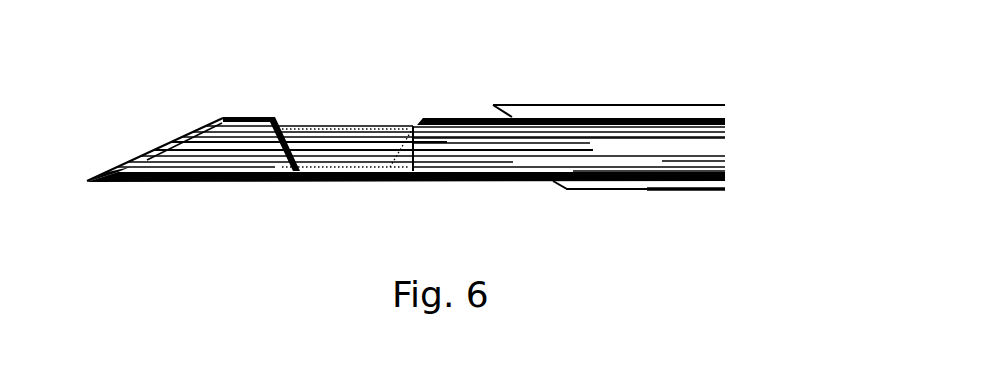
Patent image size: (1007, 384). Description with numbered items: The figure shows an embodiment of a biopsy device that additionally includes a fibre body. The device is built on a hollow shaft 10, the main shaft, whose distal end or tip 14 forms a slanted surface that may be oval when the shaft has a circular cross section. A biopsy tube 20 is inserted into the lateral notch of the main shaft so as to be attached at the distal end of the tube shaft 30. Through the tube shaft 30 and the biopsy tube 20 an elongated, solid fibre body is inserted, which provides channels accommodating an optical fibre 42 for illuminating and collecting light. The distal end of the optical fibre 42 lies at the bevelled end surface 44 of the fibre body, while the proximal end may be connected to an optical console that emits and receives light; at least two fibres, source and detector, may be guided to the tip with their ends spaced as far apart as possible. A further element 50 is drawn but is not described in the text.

The hollow shaft 10 is at (272, 192).
The distal end or tip 14 is at (103, 162).
The biopsy tube 20 is at (338, 113).
The tube shaft 30 is at (583, 119).
The optical fibre 42 is at (484, 141).
The end surface 44 is at (173, 130).
The cover layer 50 is at (639, 97).